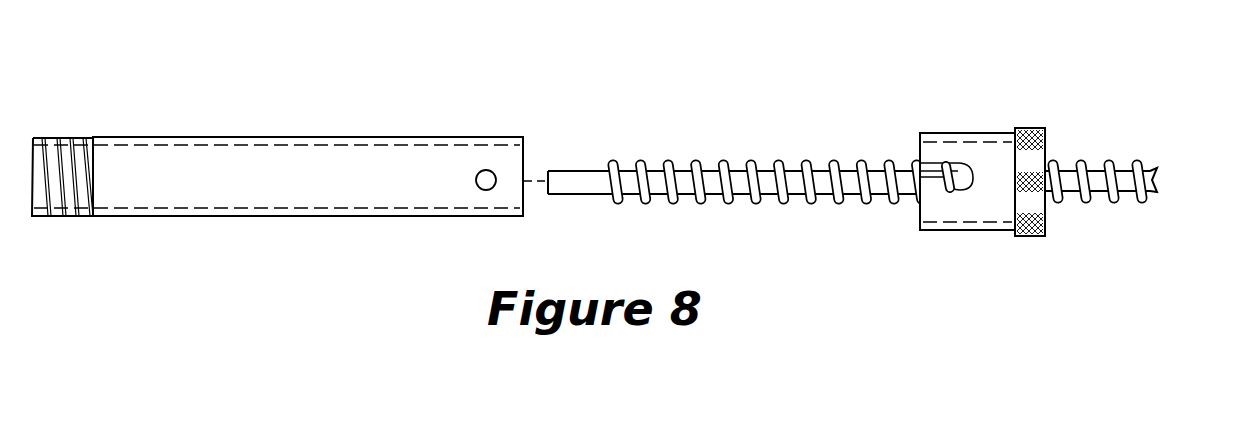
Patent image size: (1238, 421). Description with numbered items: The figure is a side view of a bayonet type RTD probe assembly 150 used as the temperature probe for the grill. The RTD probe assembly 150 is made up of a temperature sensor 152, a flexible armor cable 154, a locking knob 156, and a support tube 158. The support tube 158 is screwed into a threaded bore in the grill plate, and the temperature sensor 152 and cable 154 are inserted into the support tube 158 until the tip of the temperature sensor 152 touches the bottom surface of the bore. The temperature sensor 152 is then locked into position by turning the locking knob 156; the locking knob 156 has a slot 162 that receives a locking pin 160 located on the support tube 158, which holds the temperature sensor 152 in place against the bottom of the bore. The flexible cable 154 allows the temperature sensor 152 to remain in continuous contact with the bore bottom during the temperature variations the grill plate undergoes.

The RTD probe assembly 150 is at (537, 116).
The temperature sensor 152 is at (596, 182).
The flexible armor cable 154 is at (755, 162).
The locking knob 156 is at (968, 133).
The support tube 158 is at (302, 217).
The locking pin 160 is at (490, 170).
The slot 162 is at (958, 192).